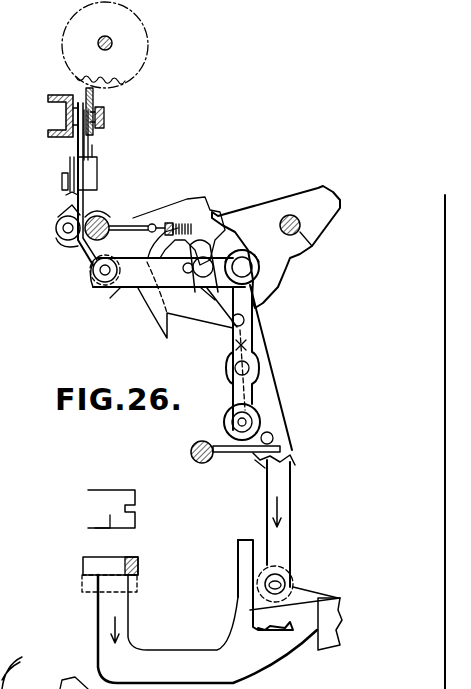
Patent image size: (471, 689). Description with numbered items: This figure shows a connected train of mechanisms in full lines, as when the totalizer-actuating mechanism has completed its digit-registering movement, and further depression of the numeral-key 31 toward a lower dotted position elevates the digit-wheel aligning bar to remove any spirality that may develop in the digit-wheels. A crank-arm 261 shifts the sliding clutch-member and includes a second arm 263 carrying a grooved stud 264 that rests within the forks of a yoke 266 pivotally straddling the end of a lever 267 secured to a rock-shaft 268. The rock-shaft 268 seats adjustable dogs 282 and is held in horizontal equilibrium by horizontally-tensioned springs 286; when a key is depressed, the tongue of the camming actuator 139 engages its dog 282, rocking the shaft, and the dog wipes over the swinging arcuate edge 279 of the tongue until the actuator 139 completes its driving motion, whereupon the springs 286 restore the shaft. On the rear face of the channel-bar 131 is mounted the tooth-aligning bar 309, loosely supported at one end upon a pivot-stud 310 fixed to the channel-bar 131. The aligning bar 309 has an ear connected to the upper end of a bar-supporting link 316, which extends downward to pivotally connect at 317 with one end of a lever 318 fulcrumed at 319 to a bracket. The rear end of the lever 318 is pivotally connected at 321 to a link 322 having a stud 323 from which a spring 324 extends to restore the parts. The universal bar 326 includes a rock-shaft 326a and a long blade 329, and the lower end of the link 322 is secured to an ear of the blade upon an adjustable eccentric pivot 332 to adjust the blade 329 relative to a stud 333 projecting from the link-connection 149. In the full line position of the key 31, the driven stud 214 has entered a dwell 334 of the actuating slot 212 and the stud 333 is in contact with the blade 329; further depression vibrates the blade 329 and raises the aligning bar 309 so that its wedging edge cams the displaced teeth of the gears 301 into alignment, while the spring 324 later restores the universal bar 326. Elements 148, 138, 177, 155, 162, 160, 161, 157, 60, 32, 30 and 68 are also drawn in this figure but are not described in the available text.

The gears 301 is at (105, 45).
The tooth-aligning bar 309 is at (95, 88).
The channel-bar 131 is at (50, 95).
The pivot-stud 310 is at (68, 116).
The numeral-key 31 is at (104, 115).
The bar-supporting link 316 is at (80, 255).
The crank-arm 261 is at (80, 150).
The second arm 263 is at (95, 160).
The stud 264 is at (62, 180).
The yoke 266 is at (66, 195).
The lever 267 is at (57, 235).
The rock-shaft 268 is at (104, 217).
The adjustable dogs 282 is at (115, 247).
The springs 286 is at (185, 200).
The camming actuator 139 is at (250, 206).
The stud 148 is at (280, 228).
The lever 138 is at (300, 232).
The dwell 334 is at (214, 257).
The pivotal connection 321 is at (255, 262).
The pivotal connection 317 is at (97, 287).
The lever 318 is at (120, 290).
The arcuate edge 279 is at (145, 320).
The fulcrum 319 is at (174, 274).
The driven stud 214 is at (196, 298).
The actuating slot 212 is at (223, 307).
The link 322 is at (232, 390).
The spring 324 is at (242, 345).
The stud 323 is at (252, 368).
The adjustable eccentric pivot 332 is at (224, 422).
The stud 333 is at (273, 432).
The link-connection 149 is at (298, 448).
The blade 329 is at (222, 455).
The universal bar 326 is at (185, 453).
The rock-shaft 326a is at (200, 463).
The stop 177 is at (262, 466).
The arm 155 is at (265, 508).
The stud 162 is at (290, 582).
The bushing 160 is at (270, 598).
The lever 161 is at (300, 597).
The block 157 is at (325, 650).
The bracket 60 is at (237, 575).
The frame 32 is at (207, 629).
The block 30 is at (138, 556).
The wheel 68 is at (25, 657).